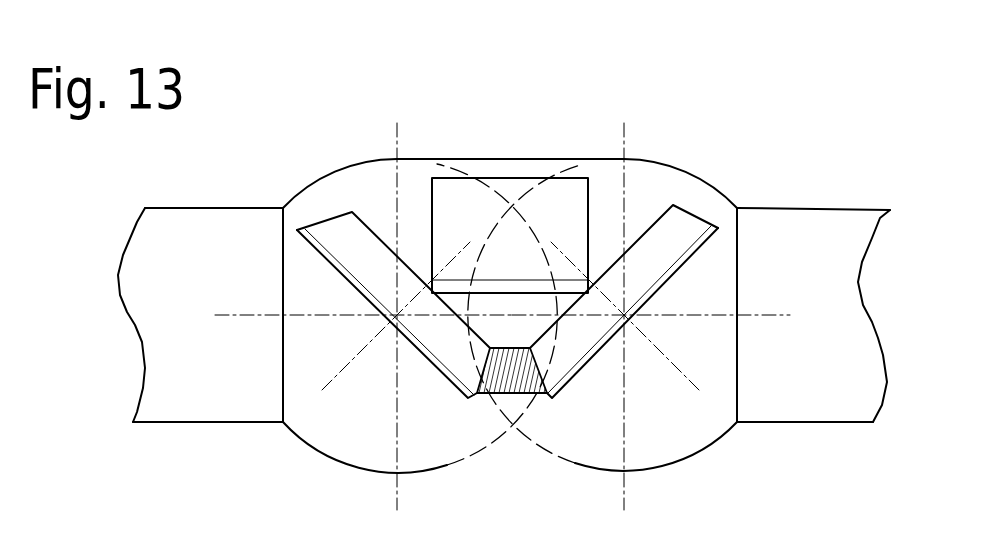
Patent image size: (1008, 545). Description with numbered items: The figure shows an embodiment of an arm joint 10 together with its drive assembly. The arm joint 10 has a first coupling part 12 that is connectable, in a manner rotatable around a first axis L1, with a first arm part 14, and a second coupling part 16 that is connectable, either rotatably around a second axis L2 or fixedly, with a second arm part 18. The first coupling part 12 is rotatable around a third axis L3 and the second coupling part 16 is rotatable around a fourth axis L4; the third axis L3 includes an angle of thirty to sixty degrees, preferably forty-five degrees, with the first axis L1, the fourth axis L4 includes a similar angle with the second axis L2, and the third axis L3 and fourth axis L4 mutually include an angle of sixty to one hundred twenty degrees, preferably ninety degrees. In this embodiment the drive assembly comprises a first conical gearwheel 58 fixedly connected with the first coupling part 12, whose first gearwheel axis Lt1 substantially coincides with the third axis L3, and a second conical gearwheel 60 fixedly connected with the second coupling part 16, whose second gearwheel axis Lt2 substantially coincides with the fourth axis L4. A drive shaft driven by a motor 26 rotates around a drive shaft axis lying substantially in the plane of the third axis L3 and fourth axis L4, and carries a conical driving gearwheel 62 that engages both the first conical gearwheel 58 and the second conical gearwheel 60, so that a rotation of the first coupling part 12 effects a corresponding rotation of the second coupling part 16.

The arm joint 10 is at (678, 100).
The first coupling part 12 is at (372, 442).
The first arm part 14 is at (195, 375).
The second coupling part 16 is at (665, 445).
The second arm part 18 is at (817, 375).
The motor 26 is at (508, 188).
The first conical gearwheel 58 is at (322, 212).
The second conical gearwheel 60 is at (702, 212).
The conical driving gearwheel 62 is at (518, 395).
The first axis L1 is at (215, 315).
The second axis L2 is at (783, 313).
The third axis L3 is at (349, 362).
The first gearwheel axis Lt1 is at (335, 375).
The fourth axis L4 is at (672, 362).
The second gearwheel axis Lt2 is at (690, 383).